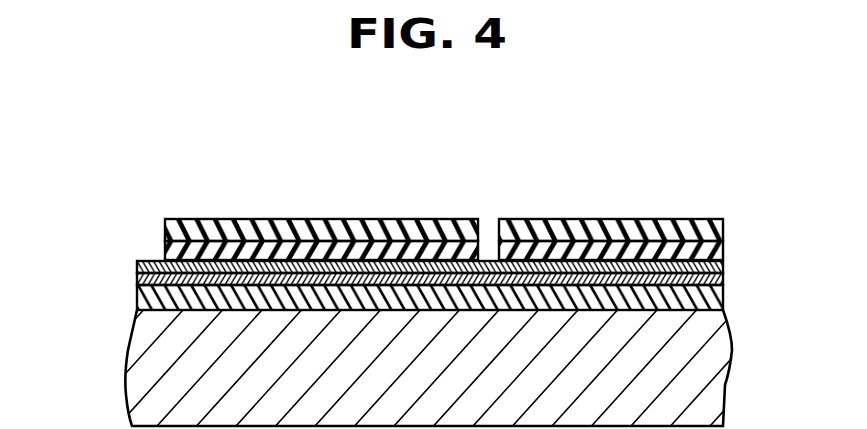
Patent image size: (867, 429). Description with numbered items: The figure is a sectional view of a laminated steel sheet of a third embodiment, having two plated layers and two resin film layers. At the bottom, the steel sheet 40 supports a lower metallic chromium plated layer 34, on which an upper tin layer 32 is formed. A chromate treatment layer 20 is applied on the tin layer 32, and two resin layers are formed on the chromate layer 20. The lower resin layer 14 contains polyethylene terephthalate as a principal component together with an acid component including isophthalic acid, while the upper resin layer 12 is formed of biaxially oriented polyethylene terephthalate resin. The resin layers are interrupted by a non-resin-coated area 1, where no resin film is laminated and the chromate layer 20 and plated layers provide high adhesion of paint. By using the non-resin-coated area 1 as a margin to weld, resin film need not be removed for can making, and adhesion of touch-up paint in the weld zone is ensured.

The non-resin-coated area 1 is at (488, 258).
The upper resin layer 12 is at (166, 228).
The lower resin layer 14 is at (164, 250).
The chromate treatment layer 20 is at (138, 264).
The tin layer 32 is at (720, 279).
The metallic chromium plated layer 34 is at (720, 297).
The steel sheet 40 is at (700, 332).